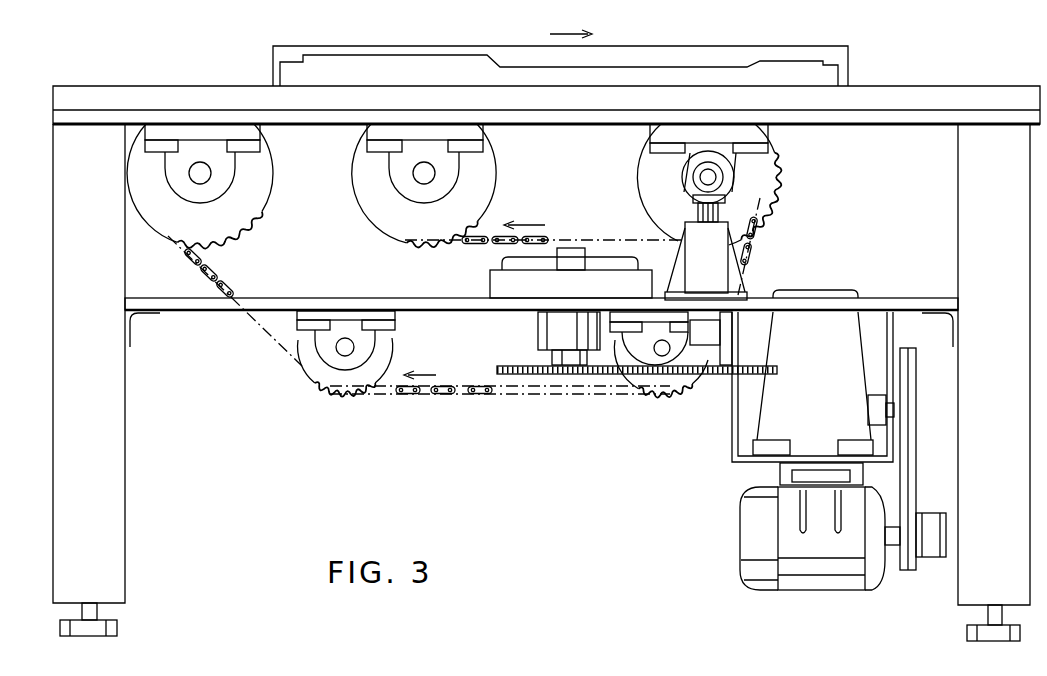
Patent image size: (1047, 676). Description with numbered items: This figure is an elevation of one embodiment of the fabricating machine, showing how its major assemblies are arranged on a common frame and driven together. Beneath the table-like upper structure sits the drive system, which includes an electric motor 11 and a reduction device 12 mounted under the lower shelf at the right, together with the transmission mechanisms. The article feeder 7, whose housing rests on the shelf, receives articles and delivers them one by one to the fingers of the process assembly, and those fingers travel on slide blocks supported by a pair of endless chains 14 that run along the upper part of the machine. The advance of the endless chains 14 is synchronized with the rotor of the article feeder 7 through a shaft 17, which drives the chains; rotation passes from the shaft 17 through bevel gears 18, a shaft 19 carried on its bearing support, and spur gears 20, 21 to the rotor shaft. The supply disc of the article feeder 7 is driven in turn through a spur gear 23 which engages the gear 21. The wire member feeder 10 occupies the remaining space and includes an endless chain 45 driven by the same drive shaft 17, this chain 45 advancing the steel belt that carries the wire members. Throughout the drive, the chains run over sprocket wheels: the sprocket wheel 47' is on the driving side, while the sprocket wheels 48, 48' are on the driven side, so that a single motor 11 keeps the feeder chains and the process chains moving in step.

The wire member feeder 10 is at (599, 103).
The sprocket wheel on the driven side 48 is at (417, 279).
The sprocket wheel on the driven side 48' is at (418, 189).
The endless chains 14 is at (475, 244).
The endless chain 45 is at (484, 394).
The sprocket wheel on the driving side 47' is at (758, 184).
The bevel gears 18 is at (690, 168).
The shaft 17 is at (700, 184).
The shaft 19 is at (713, 224).
The article feeder 7 is at (520, 296).
The spur gear 23 is at (575, 376).
The spur gear 21 is at (497, 368).
The spur gear 20 is at (722, 376).
The reduction device 12 is at (822, 425).
The electric motor 11 is at (748, 541).